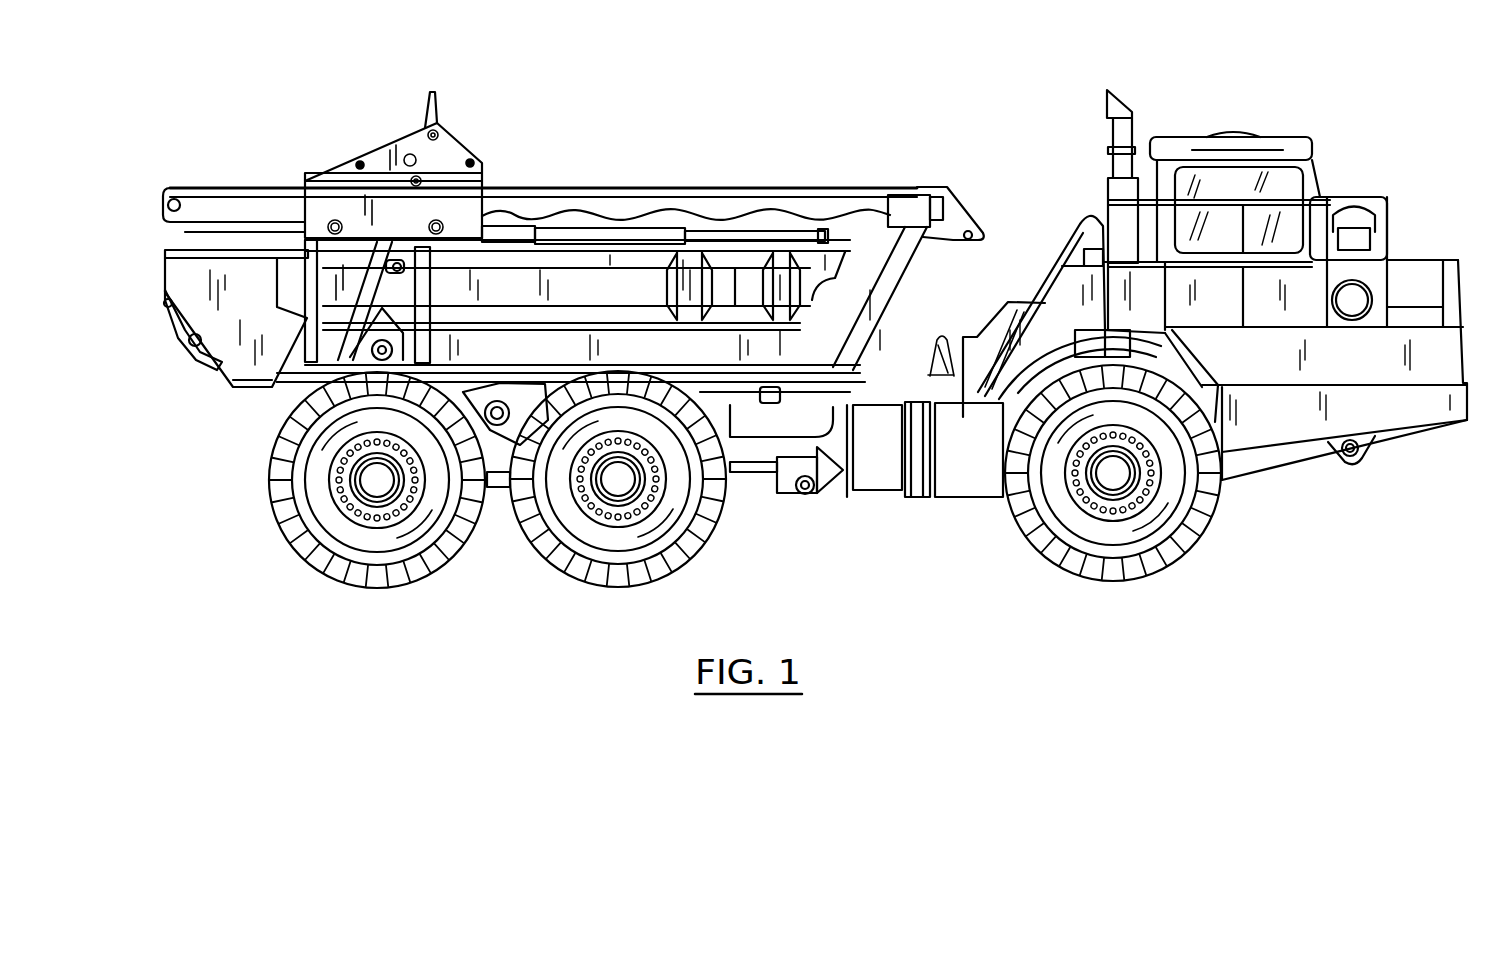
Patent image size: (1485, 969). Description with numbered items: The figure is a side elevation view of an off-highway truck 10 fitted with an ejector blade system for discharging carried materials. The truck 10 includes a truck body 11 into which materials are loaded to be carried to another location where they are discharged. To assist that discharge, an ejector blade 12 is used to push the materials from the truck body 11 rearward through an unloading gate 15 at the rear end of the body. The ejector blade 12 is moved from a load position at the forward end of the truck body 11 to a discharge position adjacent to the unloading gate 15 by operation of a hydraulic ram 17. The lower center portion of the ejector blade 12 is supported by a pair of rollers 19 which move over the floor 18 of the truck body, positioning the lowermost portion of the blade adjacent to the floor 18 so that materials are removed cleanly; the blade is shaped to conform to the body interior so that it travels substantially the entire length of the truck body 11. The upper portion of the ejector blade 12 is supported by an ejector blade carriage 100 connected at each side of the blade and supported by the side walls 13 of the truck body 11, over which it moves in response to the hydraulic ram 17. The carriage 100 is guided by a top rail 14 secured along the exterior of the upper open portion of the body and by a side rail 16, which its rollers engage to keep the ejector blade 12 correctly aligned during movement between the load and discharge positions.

The truck 10 is at (962, 163).
The truck body 11 is at (674, 172).
The ejector blade 12 is at (365, 267).
The side walls 13 is at (333, 250).
The top rail 14 is at (206, 230).
The unloading gate 15 is at (215, 363).
The side rail 16 is at (776, 205).
The hydraulic ram 17 is at (516, 225).
The floor 18 is at (330, 372).
The rollers 19 is at (325, 382).
The ejector blade carriage 100 is at (470, 113).